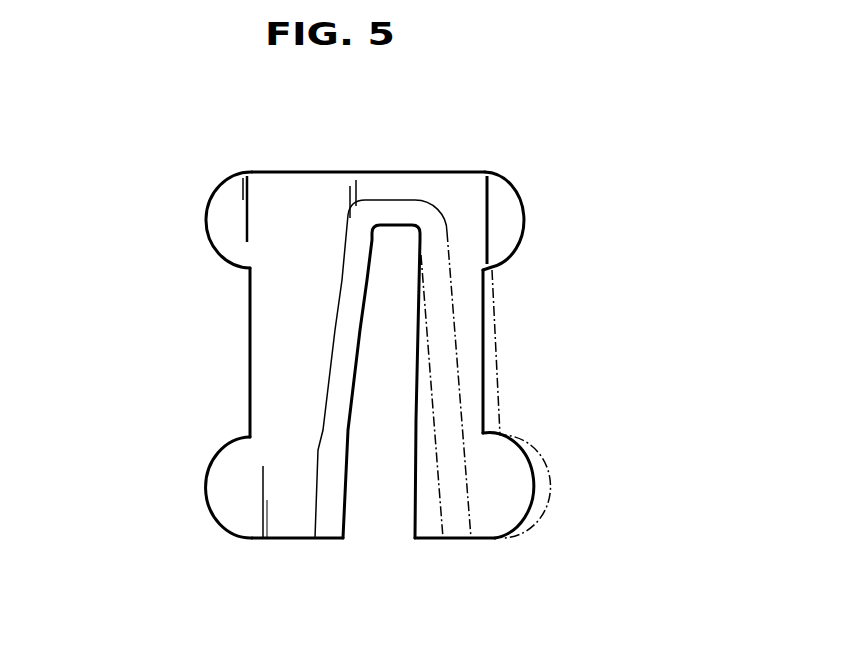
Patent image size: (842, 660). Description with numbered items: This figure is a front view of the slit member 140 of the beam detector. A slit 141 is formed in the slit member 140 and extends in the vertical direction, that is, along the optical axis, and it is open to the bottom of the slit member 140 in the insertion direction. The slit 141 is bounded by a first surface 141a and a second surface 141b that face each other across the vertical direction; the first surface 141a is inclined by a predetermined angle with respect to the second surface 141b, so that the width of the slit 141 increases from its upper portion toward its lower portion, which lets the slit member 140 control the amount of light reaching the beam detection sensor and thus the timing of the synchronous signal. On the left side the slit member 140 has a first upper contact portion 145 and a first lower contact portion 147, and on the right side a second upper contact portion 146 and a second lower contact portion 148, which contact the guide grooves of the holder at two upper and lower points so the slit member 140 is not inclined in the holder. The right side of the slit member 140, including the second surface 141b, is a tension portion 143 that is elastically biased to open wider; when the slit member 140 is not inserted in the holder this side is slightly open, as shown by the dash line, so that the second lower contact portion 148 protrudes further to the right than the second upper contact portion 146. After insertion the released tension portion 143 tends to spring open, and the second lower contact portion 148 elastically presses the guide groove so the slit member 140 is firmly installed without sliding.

The slit member 140 is at (538, 130).
The slit 141 is at (397, 262).
The first surface of the slit 141a is at (335, 520).
The second surface of the slit 141b is at (433, 520).
The tension portion 143 is at (473, 375).
The first upper contact portion 145 is at (208, 221).
The second upper contact portion 146 is at (527, 207).
The first lower contact portion 147 is at (205, 500).
The second lower contact portion 148 is at (518, 497).